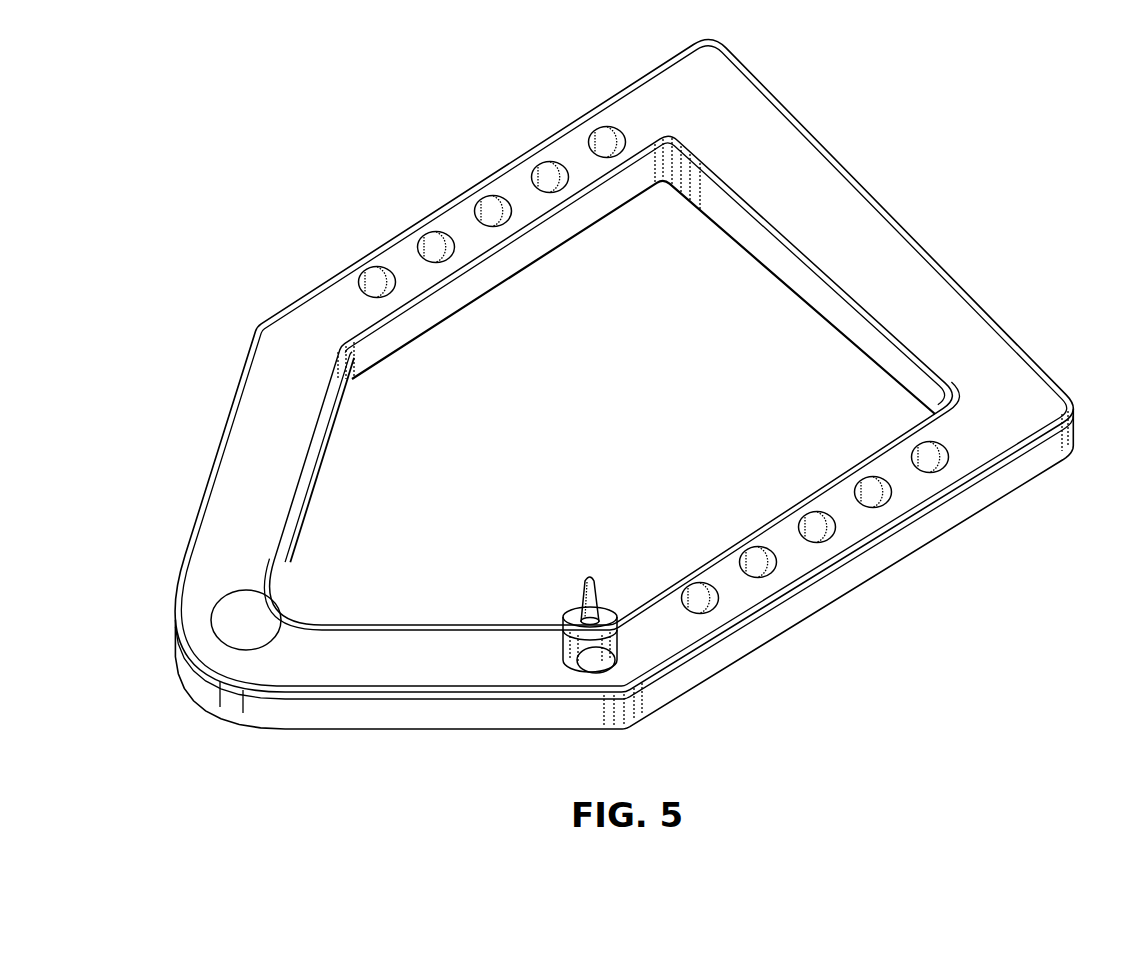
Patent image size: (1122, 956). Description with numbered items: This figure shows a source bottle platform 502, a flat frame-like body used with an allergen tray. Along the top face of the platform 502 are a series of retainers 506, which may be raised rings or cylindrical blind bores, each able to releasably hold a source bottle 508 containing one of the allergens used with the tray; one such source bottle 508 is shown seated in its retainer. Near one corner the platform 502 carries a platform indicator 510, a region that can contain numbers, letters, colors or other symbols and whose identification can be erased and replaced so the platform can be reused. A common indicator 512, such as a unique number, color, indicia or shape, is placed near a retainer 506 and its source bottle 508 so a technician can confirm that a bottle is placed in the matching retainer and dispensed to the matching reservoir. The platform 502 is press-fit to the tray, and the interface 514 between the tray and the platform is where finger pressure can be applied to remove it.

The source bottle platform 502 is at (1018, 377).
The retainer 506 is at (943, 473).
The source bottle 508 is at (590, 677).
The platform indicator 510 is at (233, 615).
The common indicator 512 is at (344, 301).
The interface 514 is at (797, 263).